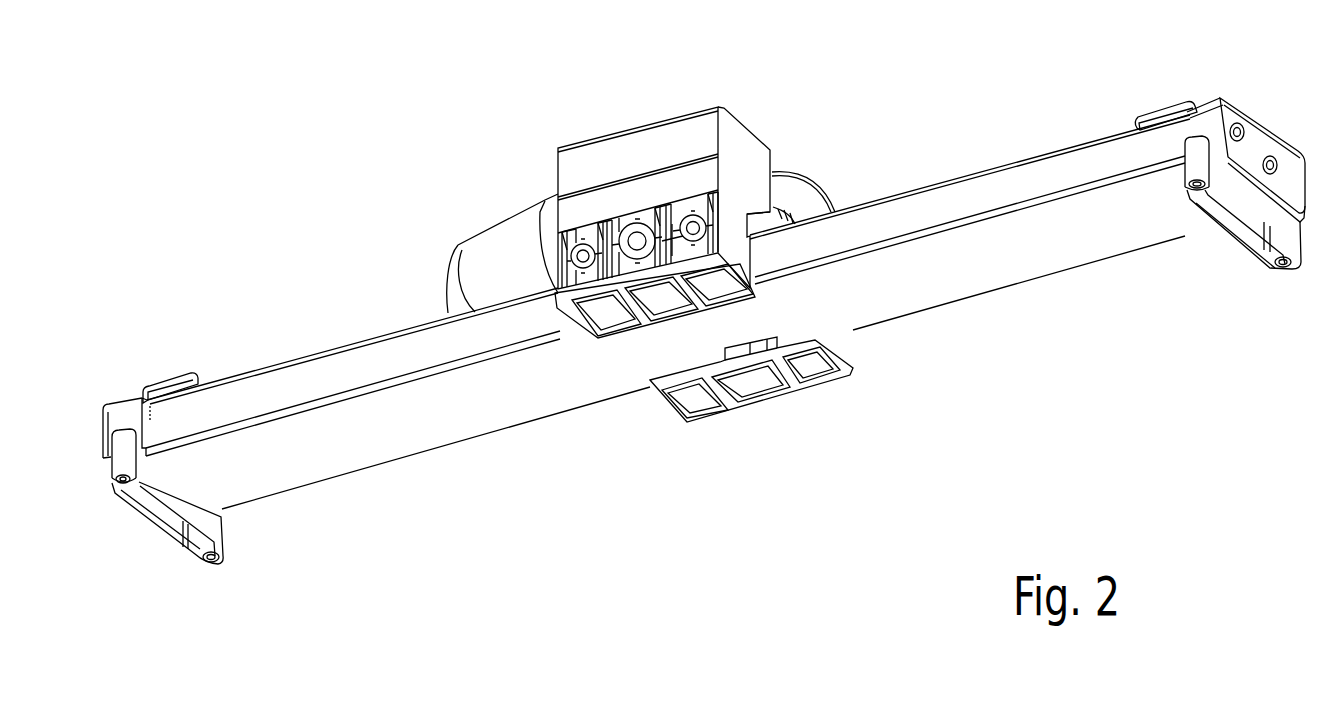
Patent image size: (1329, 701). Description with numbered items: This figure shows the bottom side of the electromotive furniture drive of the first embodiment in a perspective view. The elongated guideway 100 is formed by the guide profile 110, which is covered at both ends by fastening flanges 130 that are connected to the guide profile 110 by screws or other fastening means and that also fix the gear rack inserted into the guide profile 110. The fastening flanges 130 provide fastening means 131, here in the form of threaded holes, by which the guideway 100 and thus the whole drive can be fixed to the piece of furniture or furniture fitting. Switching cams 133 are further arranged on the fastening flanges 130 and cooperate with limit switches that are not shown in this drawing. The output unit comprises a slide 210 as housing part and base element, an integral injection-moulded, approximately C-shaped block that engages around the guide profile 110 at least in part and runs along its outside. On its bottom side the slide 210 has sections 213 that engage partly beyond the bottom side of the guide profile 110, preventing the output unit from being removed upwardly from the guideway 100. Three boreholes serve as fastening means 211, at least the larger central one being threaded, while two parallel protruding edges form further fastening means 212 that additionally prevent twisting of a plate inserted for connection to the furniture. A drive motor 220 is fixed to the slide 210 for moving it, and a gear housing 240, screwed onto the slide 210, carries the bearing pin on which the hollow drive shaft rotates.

The guideway 100 is at (997, 99).
The guide profile 110 is at (1102, 230).
The fastening flanges 130 is at (115, 418).
The fastening means 131 is at (114, 490).
The switching cams 133 is at (160, 385).
The slide 210 is at (735, 195).
The fastening means 211 is at (697, 229).
The further fastening means 212 is at (612, 250).
The sections 213 is at (752, 298).
The drive motor 220 is at (503, 248).
The gear housing 240 is at (593, 163).